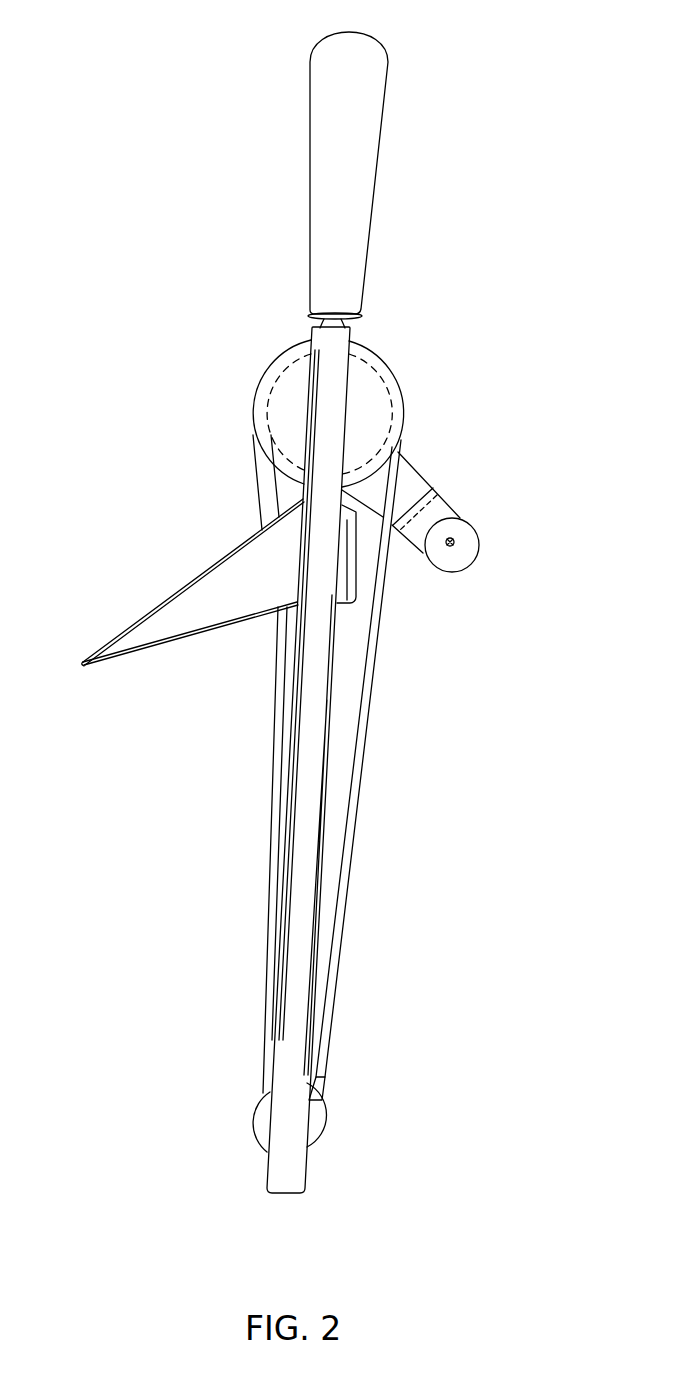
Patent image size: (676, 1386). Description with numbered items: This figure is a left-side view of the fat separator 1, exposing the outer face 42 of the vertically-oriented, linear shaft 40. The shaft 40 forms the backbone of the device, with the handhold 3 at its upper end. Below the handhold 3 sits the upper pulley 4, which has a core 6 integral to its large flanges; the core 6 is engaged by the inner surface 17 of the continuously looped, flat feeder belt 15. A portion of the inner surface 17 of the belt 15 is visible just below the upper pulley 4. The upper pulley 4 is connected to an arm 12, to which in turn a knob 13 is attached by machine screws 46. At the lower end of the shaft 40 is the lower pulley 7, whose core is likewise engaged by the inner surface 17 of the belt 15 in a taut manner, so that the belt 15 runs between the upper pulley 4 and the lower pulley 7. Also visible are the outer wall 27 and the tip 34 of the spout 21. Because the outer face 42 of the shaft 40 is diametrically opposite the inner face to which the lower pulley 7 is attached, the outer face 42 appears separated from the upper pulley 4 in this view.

The fat separator 1 is at (185, 163).
The handhold 3 is at (377, 180).
The core 6 is at (273, 385).
The upper pulley 4 is at (375, 405).
The shaft 40 is at (263, 760).
The outer face 42 is at (297, 903).
The feeder belt 15 is at (294, 767).
The inner surface 17 is at (257, 483).
The spout 21 is at (178, 609).
The outer wall 27 is at (178, 609).
The tip 34 is at (83, 662).
The arm 12 is at (410, 478).
The knob 13 is at (460, 555).
The machine screws 46 is at (456, 540).
The lower pulley 7 is at (317, 1123).